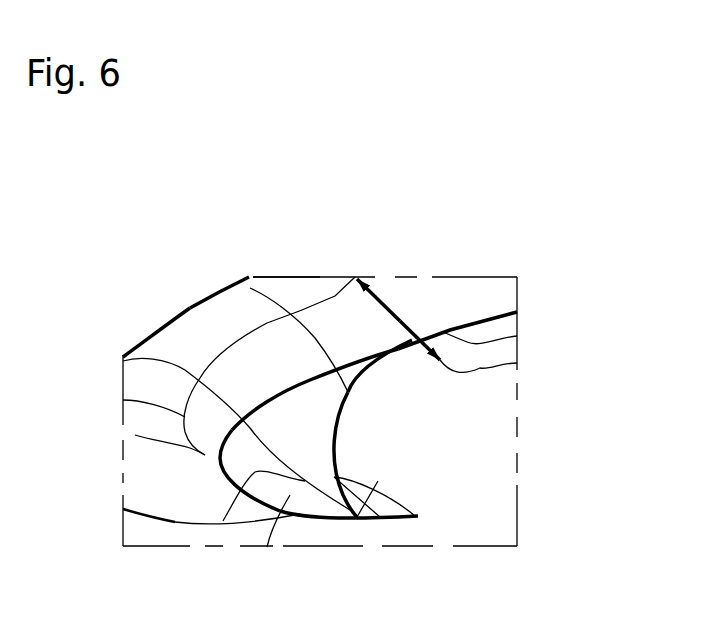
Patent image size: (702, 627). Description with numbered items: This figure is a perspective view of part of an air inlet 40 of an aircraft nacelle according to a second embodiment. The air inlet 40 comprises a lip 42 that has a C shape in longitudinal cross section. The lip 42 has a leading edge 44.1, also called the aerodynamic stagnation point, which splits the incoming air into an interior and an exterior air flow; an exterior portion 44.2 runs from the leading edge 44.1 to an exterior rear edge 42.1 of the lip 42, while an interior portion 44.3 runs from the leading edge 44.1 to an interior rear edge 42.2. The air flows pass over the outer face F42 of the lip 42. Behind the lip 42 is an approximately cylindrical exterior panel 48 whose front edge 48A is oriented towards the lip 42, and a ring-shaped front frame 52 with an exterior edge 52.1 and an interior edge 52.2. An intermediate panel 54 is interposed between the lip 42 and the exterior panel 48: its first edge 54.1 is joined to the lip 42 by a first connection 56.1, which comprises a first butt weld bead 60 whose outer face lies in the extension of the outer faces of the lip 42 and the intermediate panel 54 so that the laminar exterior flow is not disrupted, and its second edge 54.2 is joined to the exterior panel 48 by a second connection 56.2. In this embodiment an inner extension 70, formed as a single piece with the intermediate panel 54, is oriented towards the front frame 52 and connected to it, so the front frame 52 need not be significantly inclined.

The air inlet 40 is at (122, 522).
The lip 42 is at (163, 347).
The exterior rear edge 42.1 is at (222, 296).
The interior rear edge 42.2 is at (418, 518).
The leading edge 44.1 is at (213, 450).
The exterior portion 44.2 is at (295, 386).
The interior portion 44.3 is at (255, 498).
The exterior panel 48 is at (458, 307).
The front edge 48A is at (517, 336).
The front frame 52 is at (338, 451).
The exterior edge 52.1 is at (362, 367).
The interior edge 52.2 is at (378, 481).
The intermediate panel 54 is at (345, 277).
The first edge 54.1 is at (230, 290).
The second edge 54.2 is at (400, 318).
The first connection 56.1 is at (353, 387).
The second connection 56.2 is at (517, 363).
The first butt weld bead 60 is at (248, 280).
The inner extension 70 is at (346, 383).
The outer face F42 is at (243, 307).